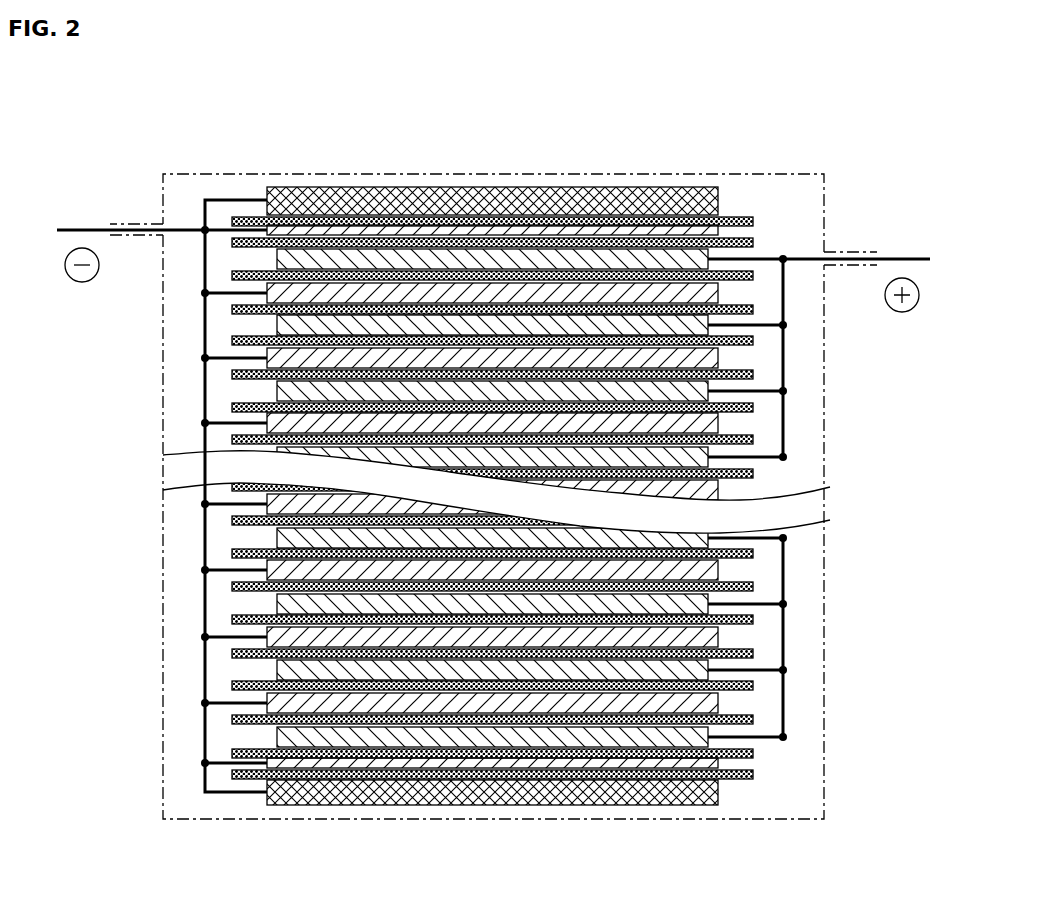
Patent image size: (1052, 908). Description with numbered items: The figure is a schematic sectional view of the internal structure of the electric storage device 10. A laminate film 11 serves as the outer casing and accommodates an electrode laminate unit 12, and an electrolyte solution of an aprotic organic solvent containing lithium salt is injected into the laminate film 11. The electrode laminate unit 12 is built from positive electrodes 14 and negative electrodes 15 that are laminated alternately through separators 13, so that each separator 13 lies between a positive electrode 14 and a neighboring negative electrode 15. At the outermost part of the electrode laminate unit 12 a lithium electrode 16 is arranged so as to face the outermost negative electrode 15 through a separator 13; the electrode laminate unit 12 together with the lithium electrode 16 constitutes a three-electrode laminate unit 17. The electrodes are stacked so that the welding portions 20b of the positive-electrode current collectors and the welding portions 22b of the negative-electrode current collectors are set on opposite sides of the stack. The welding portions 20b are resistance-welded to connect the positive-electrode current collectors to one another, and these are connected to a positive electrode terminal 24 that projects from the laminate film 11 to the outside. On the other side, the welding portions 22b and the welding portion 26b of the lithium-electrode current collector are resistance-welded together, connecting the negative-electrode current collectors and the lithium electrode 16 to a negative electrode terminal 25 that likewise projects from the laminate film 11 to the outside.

The electric storage device 10 is at (630, 124).
The laminate film 11 is at (717, 173).
The electrode laminate unit 12 is at (798, 352).
The separator 13 is at (297, 225).
The positive electrode 14 is at (278, 258).
The negative electrode 15 is at (342, 220).
The lithium electrode 16 is at (380, 190).
The three-electrode laminate unit 17 is at (538, 186).
The welding portion 20b is at (766, 256).
The welding portion 22b is at (215, 227).
The positive electrode terminal 24 is at (898, 256).
The negative electrode terminal 25 is at (80, 228).
The welding portion 26b is at (248, 200).